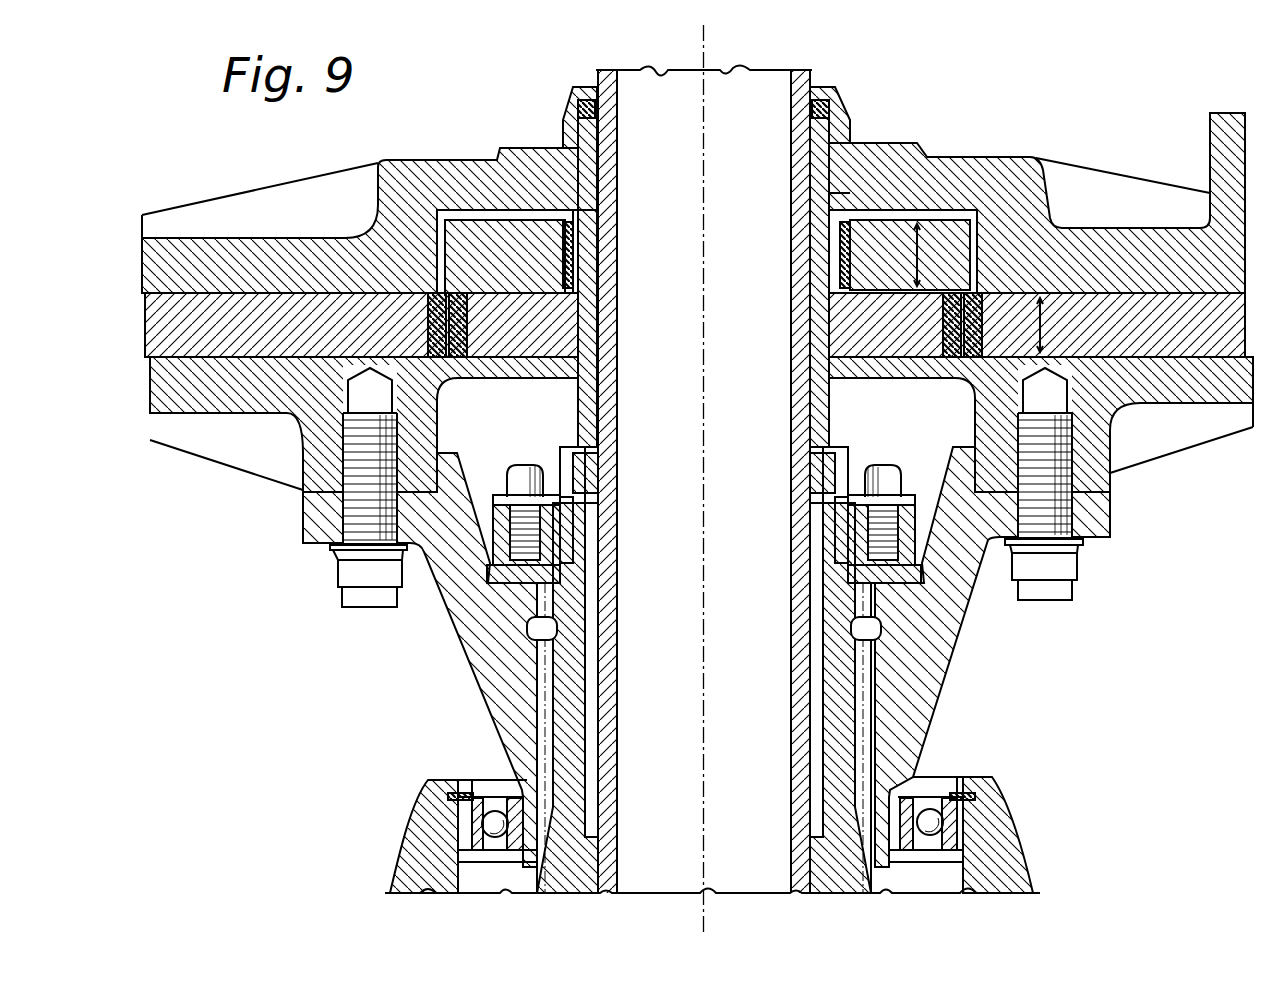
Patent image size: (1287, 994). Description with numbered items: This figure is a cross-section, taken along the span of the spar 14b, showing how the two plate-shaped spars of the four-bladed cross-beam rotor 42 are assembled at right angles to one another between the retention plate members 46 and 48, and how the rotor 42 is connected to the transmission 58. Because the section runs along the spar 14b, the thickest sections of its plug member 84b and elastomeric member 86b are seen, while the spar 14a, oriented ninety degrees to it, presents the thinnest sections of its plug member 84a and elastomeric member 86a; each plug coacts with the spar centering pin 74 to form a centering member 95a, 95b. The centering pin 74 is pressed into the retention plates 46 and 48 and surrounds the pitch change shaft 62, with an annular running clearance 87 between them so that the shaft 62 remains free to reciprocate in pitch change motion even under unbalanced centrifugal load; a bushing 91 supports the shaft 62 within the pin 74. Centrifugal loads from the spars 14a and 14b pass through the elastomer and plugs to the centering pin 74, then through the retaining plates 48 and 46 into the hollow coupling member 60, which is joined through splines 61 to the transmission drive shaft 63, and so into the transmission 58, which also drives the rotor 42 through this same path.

The four-bladed cross-beam rotor 42 is at (1052, 98).
The pitch change shaft 62 is at (800, 80).
The bushing 91 is at (560, 136).
The spar 14a is at (487, 240).
The spar centering pin 74 is at (855, 118).
The centering member 95a is at (848, 237).
The retention plate member 48 is at (1008, 175).
The elastomeric member 86a is at (575, 240).
The plug member 84a is at (580, 265).
The annular running clearance 87 is at (602, 312).
The plug member 84b is at (563, 337).
The elastomeric member 86b is at (460, 352).
The centering member 95b is at (915, 352).
The spar 14b is at (170, 342).
The retention plate member 46 is at (1197, 437).
The coupling member 60 is at (938, 653).
The splines 61 is at (875, 706).
The transmission 58 is at (978, 818).
The transmission drive shaft 63 is at (560, 848).